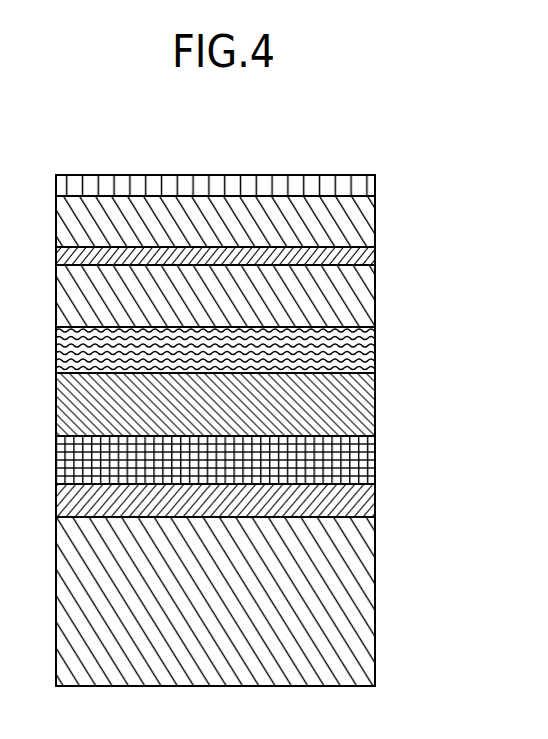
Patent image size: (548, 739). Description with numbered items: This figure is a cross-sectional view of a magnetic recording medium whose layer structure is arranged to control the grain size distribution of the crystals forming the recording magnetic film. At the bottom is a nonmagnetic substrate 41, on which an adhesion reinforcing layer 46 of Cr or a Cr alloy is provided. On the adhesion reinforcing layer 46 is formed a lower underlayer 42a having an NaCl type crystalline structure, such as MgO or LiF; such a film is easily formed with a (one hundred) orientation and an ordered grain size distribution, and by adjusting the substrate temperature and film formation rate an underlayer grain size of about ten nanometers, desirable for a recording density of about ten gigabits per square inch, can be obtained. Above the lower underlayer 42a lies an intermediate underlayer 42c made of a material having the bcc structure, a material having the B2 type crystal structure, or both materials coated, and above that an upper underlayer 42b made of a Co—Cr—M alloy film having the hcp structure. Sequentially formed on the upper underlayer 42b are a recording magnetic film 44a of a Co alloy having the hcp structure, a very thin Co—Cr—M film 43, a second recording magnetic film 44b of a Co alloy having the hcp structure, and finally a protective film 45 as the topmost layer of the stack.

The nonmagnetic substrate 41 is at (366, 596).
The lower underlayer 42a is at (366, 464).
The upper underlayer 42b is at (368, 354).
The intermediate underlayer 42c is at (366, 408).
The very thin Co—Cr—M film 43 is at (370, 260).
The recording magnetic film 44a is at (370, 300).
The recording magnetic film 44b is at (370, 228).
The protective film 45 is at (368, 188).
The adhesion reinforcing layer 46 is at (370, 506).